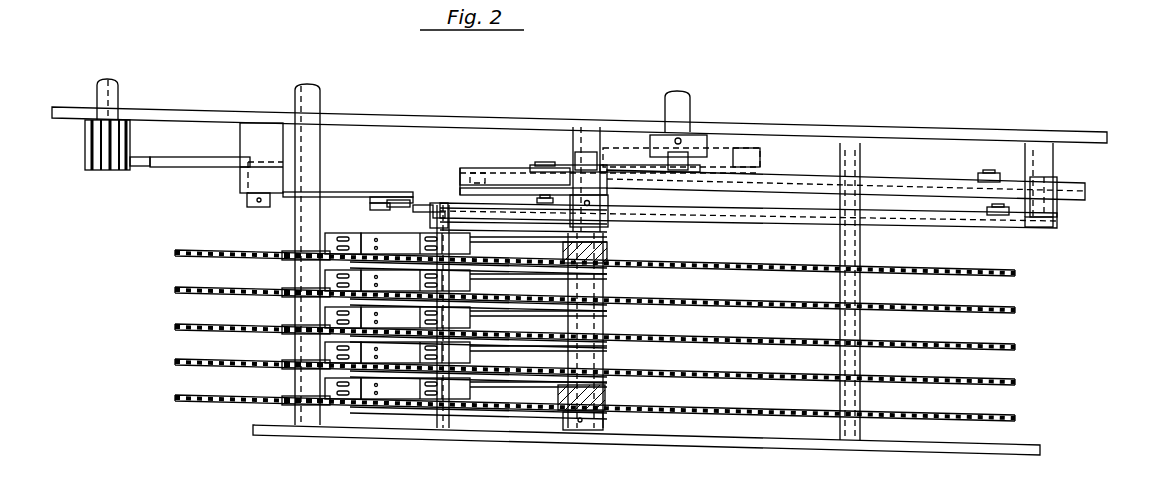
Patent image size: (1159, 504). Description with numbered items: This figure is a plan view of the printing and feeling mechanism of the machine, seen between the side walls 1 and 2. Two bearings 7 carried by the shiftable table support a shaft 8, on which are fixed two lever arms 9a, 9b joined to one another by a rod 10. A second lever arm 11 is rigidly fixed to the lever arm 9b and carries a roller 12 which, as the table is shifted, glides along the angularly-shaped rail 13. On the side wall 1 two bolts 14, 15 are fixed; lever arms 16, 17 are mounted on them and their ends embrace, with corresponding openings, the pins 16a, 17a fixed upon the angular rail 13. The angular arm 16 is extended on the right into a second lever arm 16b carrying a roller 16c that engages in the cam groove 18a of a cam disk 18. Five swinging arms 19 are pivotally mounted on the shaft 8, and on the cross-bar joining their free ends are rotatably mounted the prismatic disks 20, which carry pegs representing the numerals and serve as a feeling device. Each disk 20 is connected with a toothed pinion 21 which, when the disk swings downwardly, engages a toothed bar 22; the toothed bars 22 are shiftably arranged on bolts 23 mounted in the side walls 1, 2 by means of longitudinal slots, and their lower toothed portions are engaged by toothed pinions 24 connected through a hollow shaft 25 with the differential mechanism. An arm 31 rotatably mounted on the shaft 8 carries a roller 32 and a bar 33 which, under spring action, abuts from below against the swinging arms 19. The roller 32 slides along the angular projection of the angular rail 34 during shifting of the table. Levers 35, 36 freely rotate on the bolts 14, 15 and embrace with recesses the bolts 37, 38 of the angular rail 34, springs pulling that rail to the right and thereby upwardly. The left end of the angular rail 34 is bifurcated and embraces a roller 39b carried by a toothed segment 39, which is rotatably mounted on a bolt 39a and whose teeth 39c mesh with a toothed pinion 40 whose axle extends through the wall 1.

The side wall 1 is at (730, 128).
The side wall 2 is at (715, 440).
The bearing 7 is at (606, 252).
The shaft 8 is at (597, 325).
The lever arm 9a is at (582, 426).
The lever arm 9b is at (581, 210).
The rod 10 is at (437, 205).
The second lever arm 11 is at (497, 188).
The roller 12 is at (476, 173).
The angularly-shaped rail 13 is at (780, 178).
The bolt 14 is at (586, 155).
The bolt 15 is at (1031, 168).
The lever arm 16 is at (566, 165).
The pin 16a is at (545, 162).
The second lever arm 16b is at (632, 170).
The roller 16c is at (680, 157).
The lever arm 17 is at (1052, 180).
The pin 17a is at (990, 174).
The cam disk 18 is at (750, 158).
The cam groove 18a is at (718, 158).
The swinging arm 19 is at (522, 262).
The disk 20 is at (350, 237).
The toothed pinion 21 is at (343, 360).
The toothed bar 22 is at (210, 254).
The bolt 23 is at (850, 258).
The toothed pinion 24 is at (282, 327).
The hollow shaft 25 is at (300, 168).
The arm 31 is at (461, 168).
The roller 32 is at (445, 212).
The bar 33 is at (437, 428).
The angular rail 34 is at (870, 217).
The lever 35 is at (609, 205).
The lever 36 is at (1053, 222).
The bolt 37 is at (543, 197).
The bolt 38 is at (994, 207).
The toothed segment 39 is at (181, 160).
The bolt 39a is at (247, 140).
The roller 39b is at (396, 197).
The teeth 39c is at (140, 158).
The toothed pinion 40 is at (88, 138).